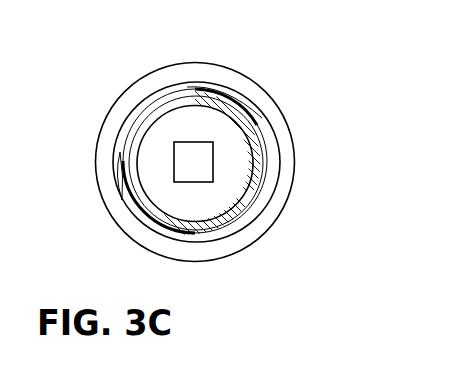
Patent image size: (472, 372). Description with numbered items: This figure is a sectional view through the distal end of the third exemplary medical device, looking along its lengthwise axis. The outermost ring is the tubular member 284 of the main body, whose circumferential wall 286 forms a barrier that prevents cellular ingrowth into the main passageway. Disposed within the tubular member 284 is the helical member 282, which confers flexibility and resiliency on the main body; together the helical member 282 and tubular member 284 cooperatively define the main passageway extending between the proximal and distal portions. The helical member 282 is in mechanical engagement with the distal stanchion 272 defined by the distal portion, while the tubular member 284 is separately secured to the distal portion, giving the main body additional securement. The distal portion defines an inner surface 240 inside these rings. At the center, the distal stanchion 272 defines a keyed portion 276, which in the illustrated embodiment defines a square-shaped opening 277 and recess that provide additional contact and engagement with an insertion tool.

The inner surface 240 is at (213, 208).
The distal stanchion 272 is at (153, 168).
The keyed portion 276 is at (194, 142).
The square-shaped opening 277 is at (194, 164).
The helical member 282 is at (145, 105).
The tubular member 284 is at (288, 137).
The circumferential wall 286 is at (263, 103).